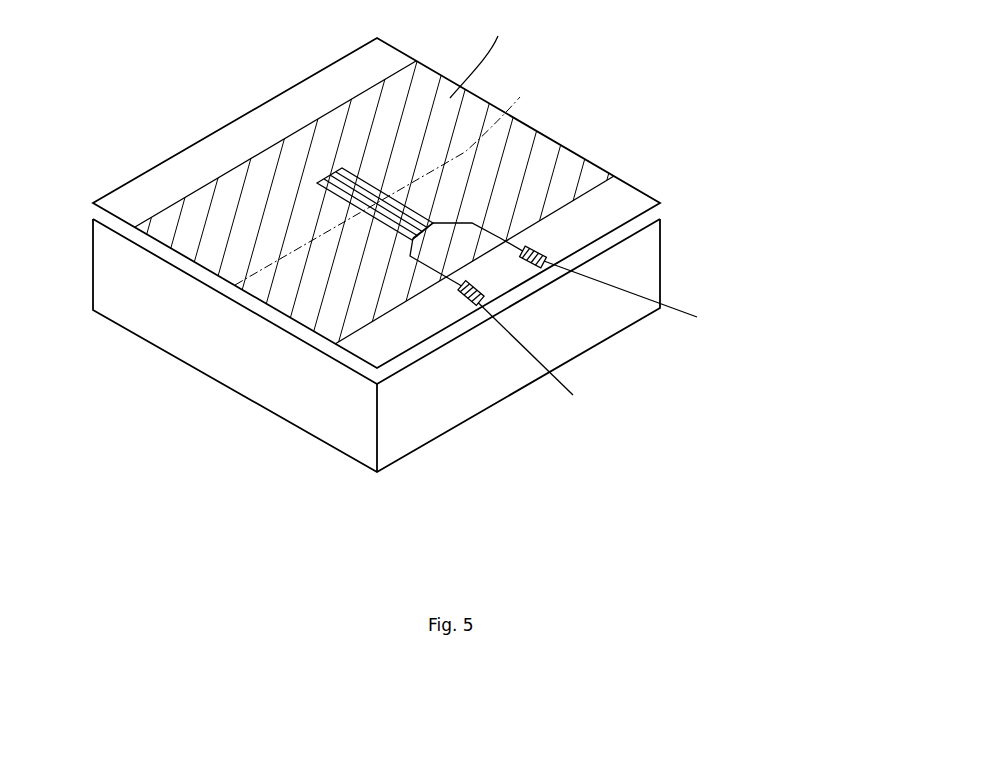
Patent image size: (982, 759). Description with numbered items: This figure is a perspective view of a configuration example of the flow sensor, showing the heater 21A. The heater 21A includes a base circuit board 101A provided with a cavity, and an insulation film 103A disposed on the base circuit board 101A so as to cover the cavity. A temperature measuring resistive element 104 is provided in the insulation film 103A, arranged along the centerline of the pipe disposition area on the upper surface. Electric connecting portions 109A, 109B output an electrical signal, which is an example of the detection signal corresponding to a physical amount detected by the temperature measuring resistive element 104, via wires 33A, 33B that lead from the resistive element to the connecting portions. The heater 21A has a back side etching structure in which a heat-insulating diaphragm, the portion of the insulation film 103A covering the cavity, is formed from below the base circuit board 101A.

The heater 21A is at (599, 101).
The base circuit board 101A is at (660, 262).
The insulation film 103A is at (664, 212).
The temperature measuring resistive element 104 is at (357, 206).
The electric connecting portion 109A is at (542, 251).
The electric connecting portion 109B is at (463, 302).
The wire 33A is at (697, 317).
The wire 33B is at (557, 381).